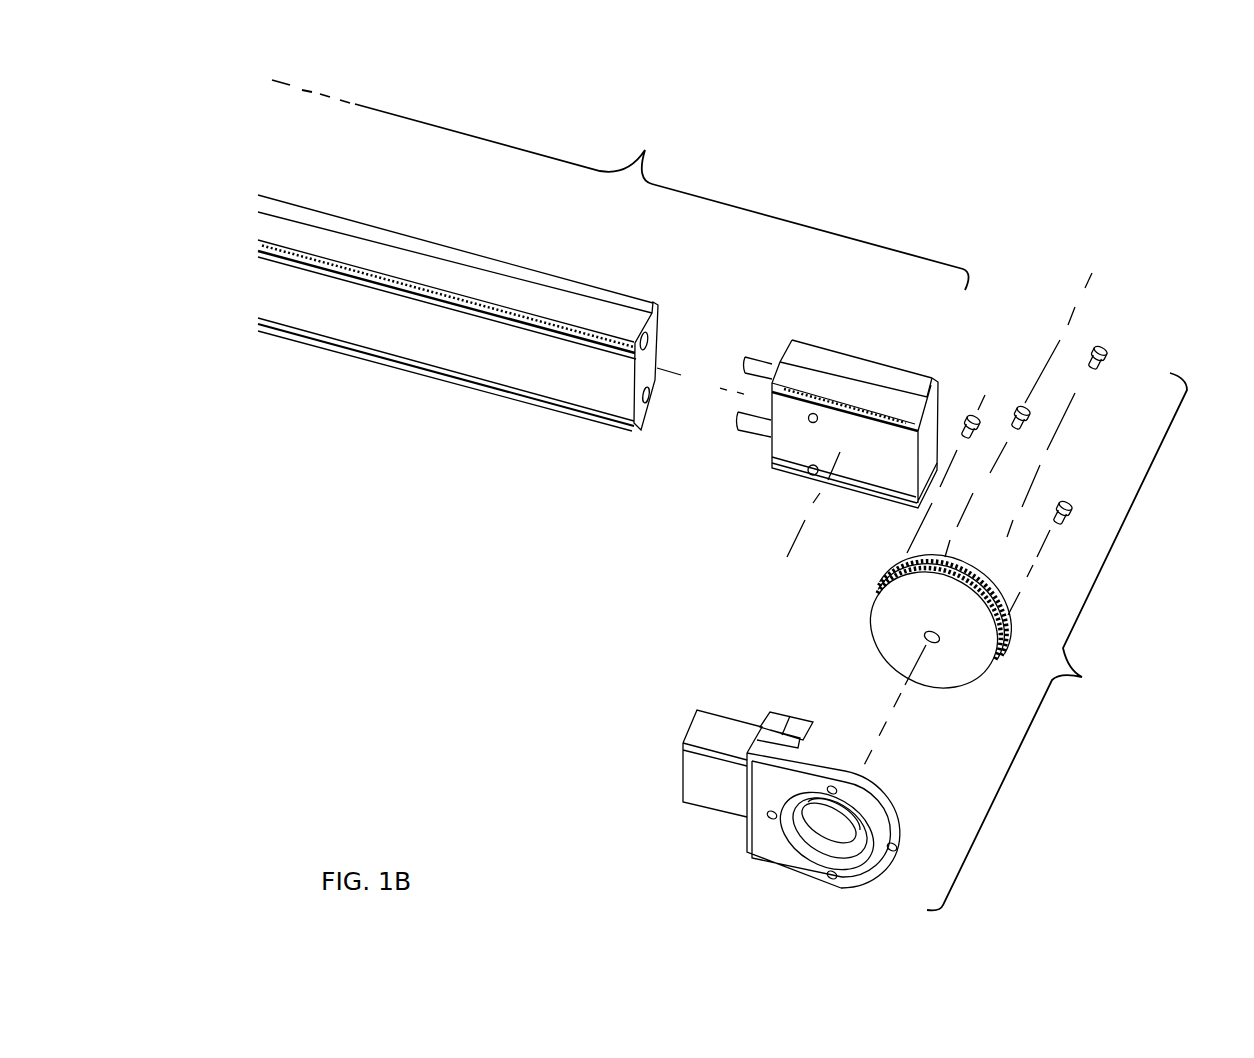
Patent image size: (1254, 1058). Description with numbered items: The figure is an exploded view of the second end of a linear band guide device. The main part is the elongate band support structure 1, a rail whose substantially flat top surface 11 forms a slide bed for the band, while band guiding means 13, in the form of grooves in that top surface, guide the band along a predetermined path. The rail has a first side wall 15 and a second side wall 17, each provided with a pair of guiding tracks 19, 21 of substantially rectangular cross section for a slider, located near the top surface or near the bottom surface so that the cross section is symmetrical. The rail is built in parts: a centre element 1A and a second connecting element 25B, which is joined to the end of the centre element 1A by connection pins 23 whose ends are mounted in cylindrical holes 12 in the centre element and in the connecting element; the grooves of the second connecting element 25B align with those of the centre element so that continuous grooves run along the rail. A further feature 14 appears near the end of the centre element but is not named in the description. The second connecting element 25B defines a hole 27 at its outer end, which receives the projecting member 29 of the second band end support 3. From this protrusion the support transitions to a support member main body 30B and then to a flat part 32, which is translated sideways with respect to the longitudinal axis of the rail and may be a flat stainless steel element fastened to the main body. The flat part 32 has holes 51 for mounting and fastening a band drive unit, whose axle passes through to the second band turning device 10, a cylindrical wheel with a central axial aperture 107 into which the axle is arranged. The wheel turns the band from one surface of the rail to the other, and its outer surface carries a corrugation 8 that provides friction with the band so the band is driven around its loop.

The elongate band support structure 1 is at (620, 185).
The centre element 1A is at (438, 378).
The second band end support 3 is at (1057, 641).
The corrugation 8 is at (876, 599).
The second band turning device 10 is at (870, 628).
The flat top surface 11 is at (641, 313).
The cylindrical holes 12 is at (656, 343).
The band guiding means 13 is at (592, 307).
The lower slot 14 is at (647, 408).
The first side wall 15 is at (343, 307).
The second side wall 17 is at (658, 331).
The guiding track 19 is at (660, 305).
The guiding track 21 is at (633, 350).
The connection pins 23 is at (755, 354).
The second connecting element 25B is at (793, 473).
The hole 27 is at (930, 423).
The projecting member 29 is at (720, 712).
The support member main body 30B is at (770, 862).
The flat part 32 is at (907, 807).
The holes 51 is at (772, 819).
The central axial aperture 107 is at (928, 643).